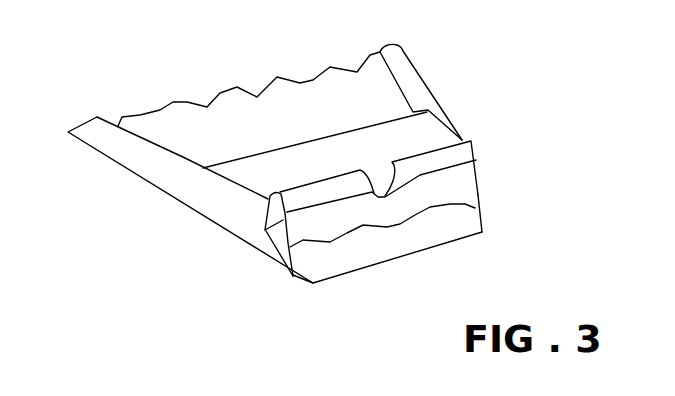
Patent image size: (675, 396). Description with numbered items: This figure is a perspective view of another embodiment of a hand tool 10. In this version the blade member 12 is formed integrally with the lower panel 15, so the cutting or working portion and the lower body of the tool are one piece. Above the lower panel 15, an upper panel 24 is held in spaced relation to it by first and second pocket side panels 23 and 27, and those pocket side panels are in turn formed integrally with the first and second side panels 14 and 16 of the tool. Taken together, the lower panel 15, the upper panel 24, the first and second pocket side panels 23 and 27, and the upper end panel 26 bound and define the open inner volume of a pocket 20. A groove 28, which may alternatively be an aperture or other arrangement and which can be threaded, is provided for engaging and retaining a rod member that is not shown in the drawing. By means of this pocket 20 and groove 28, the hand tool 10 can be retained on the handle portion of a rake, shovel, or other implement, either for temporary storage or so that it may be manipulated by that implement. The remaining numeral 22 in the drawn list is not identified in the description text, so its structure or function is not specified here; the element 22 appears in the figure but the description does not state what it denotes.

The hand tool 10 is at (324, 167).
The blade member 12 is at (249, 86).
The first side panel 14 is at (190, 200).
The lower panel 15 is at (387, 261).
The second side panel 16 is at (421, 92).
The pocket 20 is at (510, 213).
The front panel 22 is at (394, 151).
The first pocket side panel 23 is at (271, 253).
The upper panel 24 is at (297, 187).
The upper end panel 26 is at (342, 71).
The second pocket side panel 27 is at (421, 197).
The groove 28 is at (381, 248).